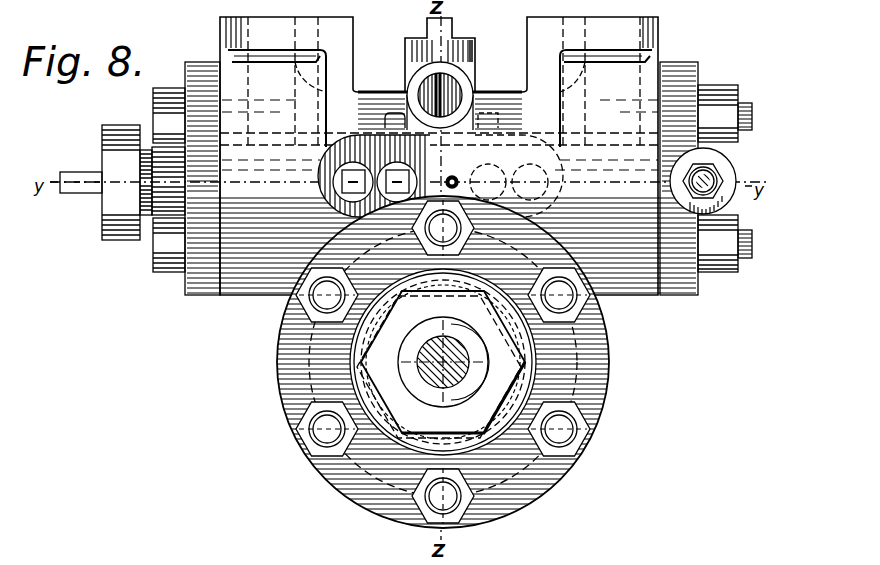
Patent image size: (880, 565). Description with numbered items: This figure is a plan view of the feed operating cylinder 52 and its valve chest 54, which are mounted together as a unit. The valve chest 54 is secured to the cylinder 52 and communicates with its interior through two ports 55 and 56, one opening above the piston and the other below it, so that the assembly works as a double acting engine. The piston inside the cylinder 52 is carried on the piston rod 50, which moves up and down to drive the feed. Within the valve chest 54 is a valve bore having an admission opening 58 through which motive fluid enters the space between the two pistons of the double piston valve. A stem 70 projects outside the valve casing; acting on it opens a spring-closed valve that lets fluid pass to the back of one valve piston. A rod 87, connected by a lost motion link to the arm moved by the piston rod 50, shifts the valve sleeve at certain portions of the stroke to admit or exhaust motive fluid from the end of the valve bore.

The piston rod 50 is at (436, 388).
The cylinder 52 is at (593, 360).
The valve chest 54 is at (655, 172).
The port 55 is at (412, 316).
The port 56 is at (490, 318).
The admission opening 58 is at (455, 88).
The stem 70 is at (78, 176).
The rod 87 is at (720, 173).